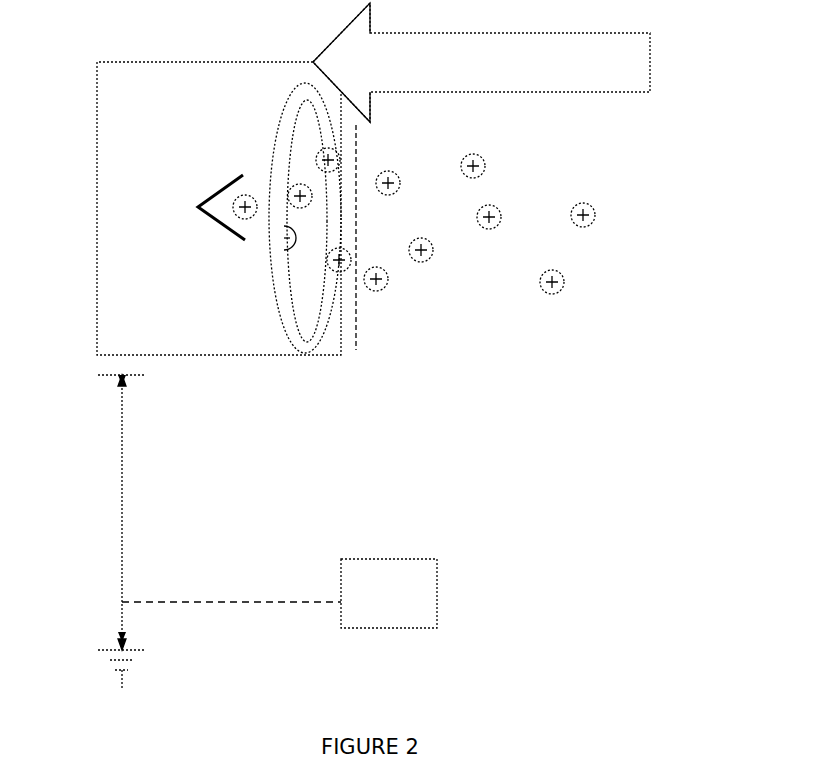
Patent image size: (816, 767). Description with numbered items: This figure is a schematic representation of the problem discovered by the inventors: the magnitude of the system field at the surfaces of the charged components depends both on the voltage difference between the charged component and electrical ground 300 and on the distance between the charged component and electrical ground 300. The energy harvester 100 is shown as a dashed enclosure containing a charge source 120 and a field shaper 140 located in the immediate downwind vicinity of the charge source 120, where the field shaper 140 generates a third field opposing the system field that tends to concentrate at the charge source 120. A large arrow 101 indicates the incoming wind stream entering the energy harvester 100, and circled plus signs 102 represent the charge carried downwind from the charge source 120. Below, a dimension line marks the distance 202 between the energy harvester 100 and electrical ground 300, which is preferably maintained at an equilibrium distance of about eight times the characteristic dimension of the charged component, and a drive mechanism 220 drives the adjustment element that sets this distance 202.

The energy harvester 100 is at (226, 197).
The air flow 101 is at (481, 62).
The ions / charged particles 102 is at (592, 225).
The charge source 120 is at (203, 182).
The field shaper 140 is at (266, 315).
The distance 202 is at (136, 512).
The drive mechanism 220 is at (279, 593).
The electrical ground 300 is at (147, 663).